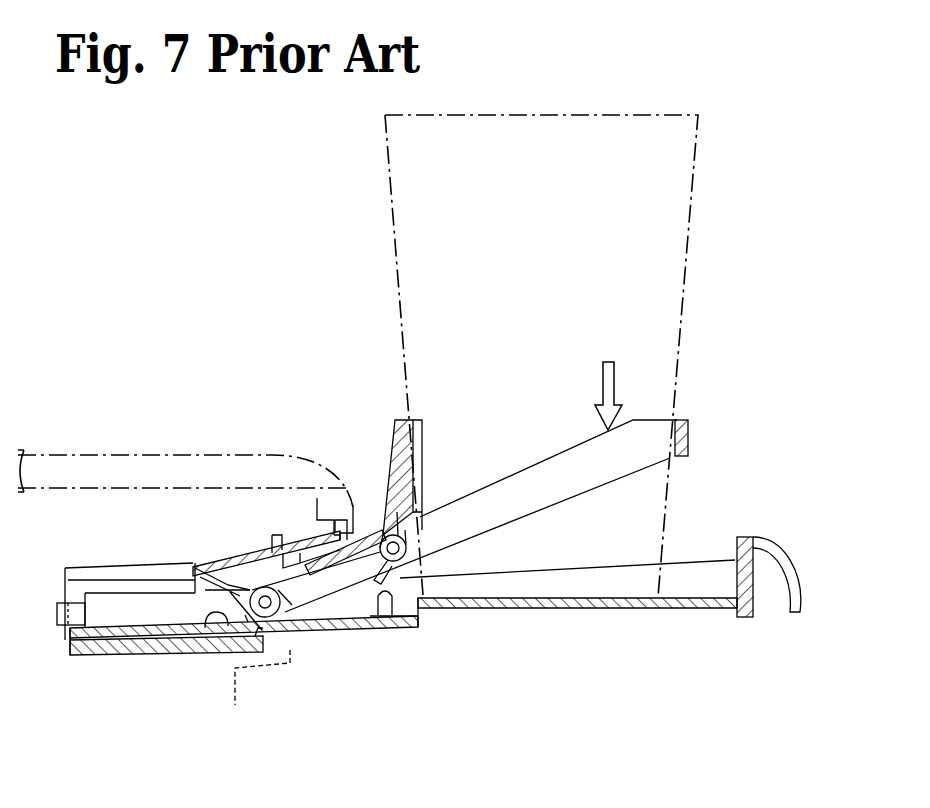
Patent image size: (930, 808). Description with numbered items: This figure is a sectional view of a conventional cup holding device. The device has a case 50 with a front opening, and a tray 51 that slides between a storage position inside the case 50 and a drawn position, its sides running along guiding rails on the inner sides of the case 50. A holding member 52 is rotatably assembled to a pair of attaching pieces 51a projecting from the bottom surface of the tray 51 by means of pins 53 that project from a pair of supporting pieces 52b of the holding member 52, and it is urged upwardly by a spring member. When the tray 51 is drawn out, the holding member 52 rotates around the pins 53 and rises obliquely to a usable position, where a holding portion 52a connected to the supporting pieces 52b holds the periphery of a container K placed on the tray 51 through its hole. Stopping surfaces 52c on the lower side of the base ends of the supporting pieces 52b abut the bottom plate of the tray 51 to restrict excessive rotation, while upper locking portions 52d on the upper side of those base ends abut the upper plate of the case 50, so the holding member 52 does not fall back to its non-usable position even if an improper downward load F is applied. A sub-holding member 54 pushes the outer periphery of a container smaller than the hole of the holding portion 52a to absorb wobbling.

The container K is at (517, 112).
The downward load F is at (608, 378).
The case 50 is at (118, 650).
The tray 51 is at (596, 610).
The attaching pieces 51a is at (243, 593).
The holding member 52 is at (421, 554).
The holding portion 52a is at (528, 478).
The supporting pieces 52b is at (370, 645).
The stopping surfaces 52c is at (200, 605).
The upper locking portions 52d is at (200, 587).
The pins 53 is at (290, 612).
The sub-holding member 54 is at (393, 420).